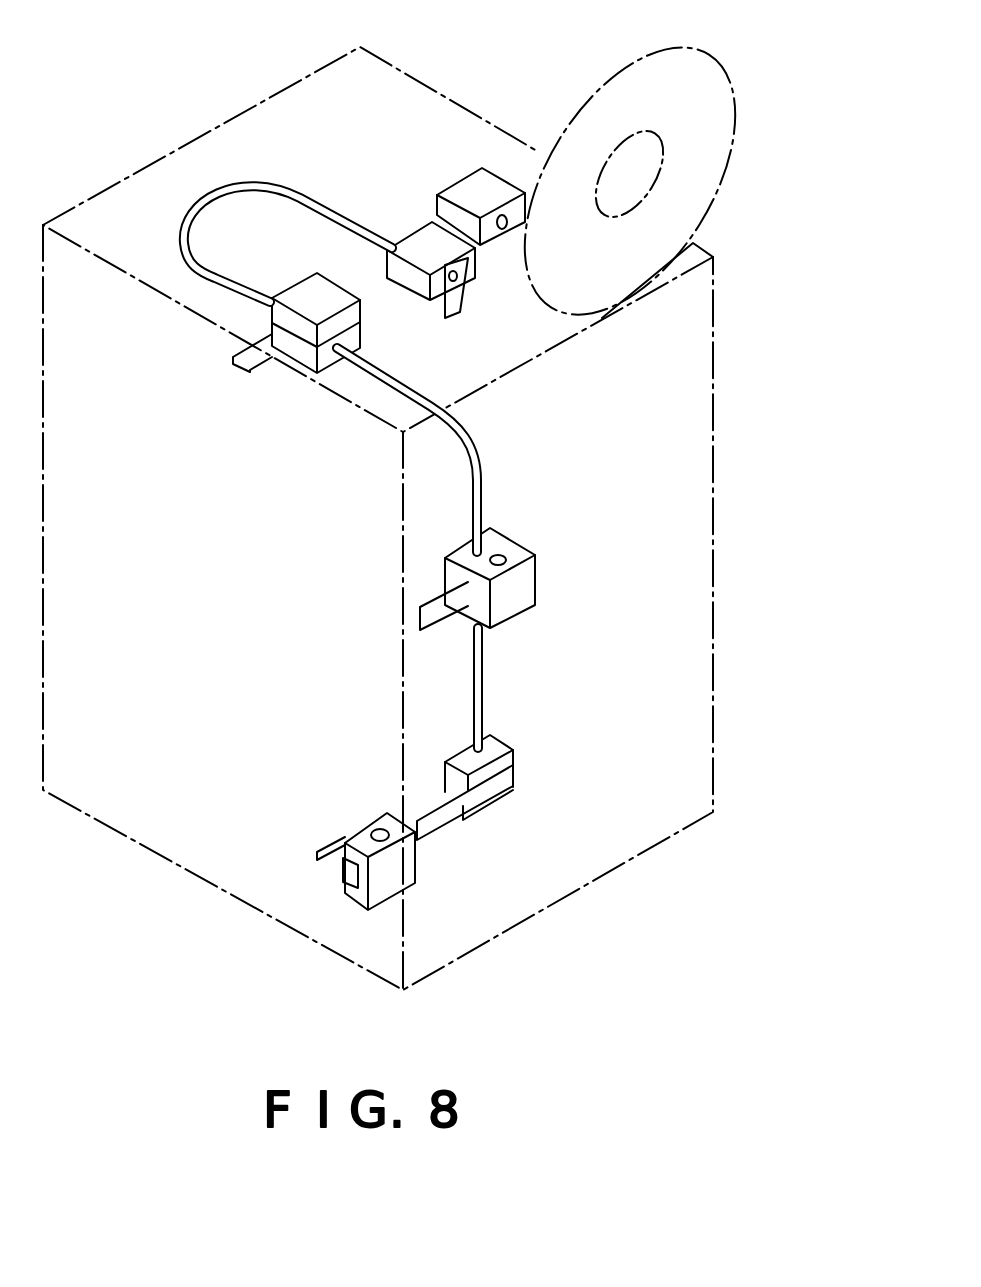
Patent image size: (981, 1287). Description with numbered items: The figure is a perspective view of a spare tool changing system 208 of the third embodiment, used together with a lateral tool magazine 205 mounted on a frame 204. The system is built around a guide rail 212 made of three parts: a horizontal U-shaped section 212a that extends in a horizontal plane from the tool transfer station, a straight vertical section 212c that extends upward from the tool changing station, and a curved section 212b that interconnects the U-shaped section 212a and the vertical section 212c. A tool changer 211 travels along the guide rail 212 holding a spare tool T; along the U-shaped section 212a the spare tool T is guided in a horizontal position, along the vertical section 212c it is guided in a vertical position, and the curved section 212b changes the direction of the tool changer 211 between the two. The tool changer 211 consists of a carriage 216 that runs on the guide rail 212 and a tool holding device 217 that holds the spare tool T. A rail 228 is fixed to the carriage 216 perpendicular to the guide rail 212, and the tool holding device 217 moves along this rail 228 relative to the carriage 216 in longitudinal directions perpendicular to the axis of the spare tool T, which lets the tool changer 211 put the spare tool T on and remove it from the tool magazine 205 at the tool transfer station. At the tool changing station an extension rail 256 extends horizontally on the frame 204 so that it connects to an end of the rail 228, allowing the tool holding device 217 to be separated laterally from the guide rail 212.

The frame 204 is at (202, 137).
The lateral tool magazine 205 is at (736, 136).
The spare tool changing system 208 is at (389, 479).
The tool changer 211 is at (434, 147).
The guide rail 212 is at (197, 212).
The horizontal U-shaped section 212a is at (198, 270).
The curved section 212b is at (462, 440).
The straight vertical section 212c is at (477, 665).
The carriage 216 is at (422, 230).
The tool holding device 217 is at (458, 192).
The rail 228 is at (422, 256).
The extension rail 256 is at (433, 812).
The spare tool T is at (283, 294).